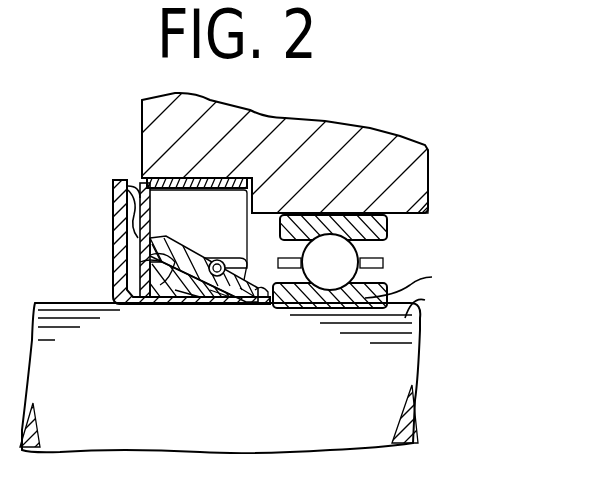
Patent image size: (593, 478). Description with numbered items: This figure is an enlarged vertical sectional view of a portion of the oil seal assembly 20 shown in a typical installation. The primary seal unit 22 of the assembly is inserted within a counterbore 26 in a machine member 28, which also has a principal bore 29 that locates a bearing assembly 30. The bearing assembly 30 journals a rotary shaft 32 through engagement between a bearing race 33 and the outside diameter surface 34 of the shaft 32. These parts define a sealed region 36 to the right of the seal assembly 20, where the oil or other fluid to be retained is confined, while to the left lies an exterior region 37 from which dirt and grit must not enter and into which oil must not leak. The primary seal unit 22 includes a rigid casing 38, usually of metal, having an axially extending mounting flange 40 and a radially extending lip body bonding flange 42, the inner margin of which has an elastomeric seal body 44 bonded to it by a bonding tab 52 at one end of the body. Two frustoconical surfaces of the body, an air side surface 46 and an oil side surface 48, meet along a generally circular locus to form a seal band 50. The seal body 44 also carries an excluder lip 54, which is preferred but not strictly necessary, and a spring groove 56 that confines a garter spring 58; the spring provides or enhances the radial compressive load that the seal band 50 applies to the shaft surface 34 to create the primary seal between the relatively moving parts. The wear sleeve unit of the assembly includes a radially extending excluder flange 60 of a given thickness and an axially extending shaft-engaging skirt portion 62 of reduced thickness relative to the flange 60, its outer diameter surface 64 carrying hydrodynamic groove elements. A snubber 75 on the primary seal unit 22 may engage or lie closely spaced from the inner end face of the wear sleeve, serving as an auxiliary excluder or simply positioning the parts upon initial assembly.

The oil seal assembly 20 is at (81, 190).
The primary seal unit 22 is at (198, 197).
The counterbore 26 is at (245, 180).
The machine member 28 is at (309, 173).
The principal bore 29 is at (424, 210).
The bearing assembly 30 is at (412, 252).
The rotary shaft 32 is at (280, 424).
The bearing race 33 is at (412, 281).
The outside diameter surface 34 is at (425, 300).
The sealed region 36 is at (453, 213).
The exterior region 37 is at (15, 255).
The rigid casing 38 is at (162, 170).
The mounting flange 40 is at (210, 178).
The lip body bonding flange 42 is at (112, 256).
The elastomeric seal body 44 is at (182, 304).
The air side surface 46 is at (152, 314).
The oil side surface 48 is at (258, 300).
The seal band 50 is at (217, 308).
The bonding tab 52 is at (153, 269).
The excluder lip 54 is at (120, 312).
The spring groove 56 is at (225, 272).
The garter spring 58 is at (220, 261).
The excluder flange 60 is at (118, 229).
The shaft-engaging skirt portion 62 is at (178, 304).
The outer diameter surface 64 is at (247, 308).
The snubber 75 is at (140, 198).